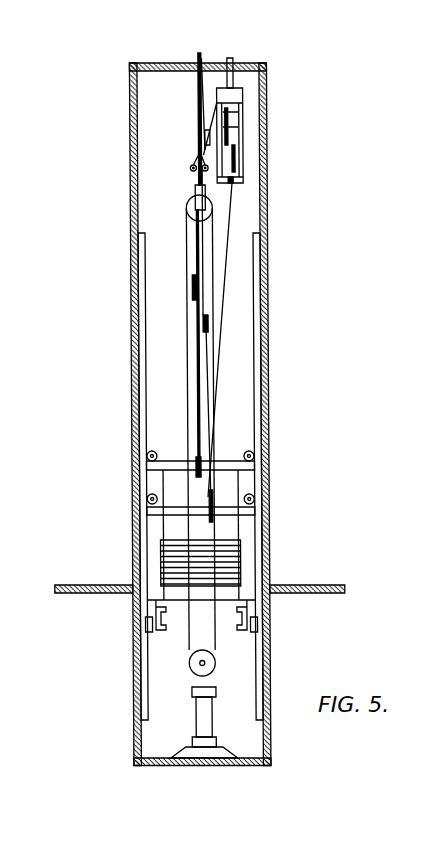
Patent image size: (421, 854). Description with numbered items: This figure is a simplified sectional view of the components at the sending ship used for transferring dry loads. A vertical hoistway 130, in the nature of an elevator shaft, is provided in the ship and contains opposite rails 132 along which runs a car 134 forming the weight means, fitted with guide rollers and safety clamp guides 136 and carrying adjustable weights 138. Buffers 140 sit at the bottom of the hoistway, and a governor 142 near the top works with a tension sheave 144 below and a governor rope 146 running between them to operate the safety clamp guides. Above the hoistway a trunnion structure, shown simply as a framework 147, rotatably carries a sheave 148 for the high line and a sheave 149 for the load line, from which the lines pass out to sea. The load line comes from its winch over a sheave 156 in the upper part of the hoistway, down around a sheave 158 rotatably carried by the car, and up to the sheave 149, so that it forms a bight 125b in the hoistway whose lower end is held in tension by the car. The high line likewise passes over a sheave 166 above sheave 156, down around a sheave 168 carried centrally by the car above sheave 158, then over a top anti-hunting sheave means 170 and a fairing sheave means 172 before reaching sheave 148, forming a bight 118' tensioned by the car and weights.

The vertical hoistway 130 is at (128, 371).
The rails 132 is at (143, 249).
The car 134 is at (252, 526).
The guide rollers and safety clamp guides 136 is at (141, 624).
The adjustable weights 138 is at (237, 566).
The buffers 140 is at (191, 716).
The governor 142 is at (190, 165).
The tension sheave 144 is at (186, 660).
The governor rope 146 is at (186, 211).
The framework 147 is at (243, 177).
The sheave for the high line 148 is at (229, 121).
The sheave for the load line 149 is at (233, 152).
The sheave 156 is at (206, 328).
The sheave 158 is at (209, 499).
The sheave 166 is at (191, 287).
The sheave 168 is at (194, 458).
The top anti-hunting sheave means 170 is at (201, 62).
The fairing sheave means 172 is at (204, 136).
The bight of the high line 118' is at (173, 333).
The bight of the load line 125b is at (229, 214).